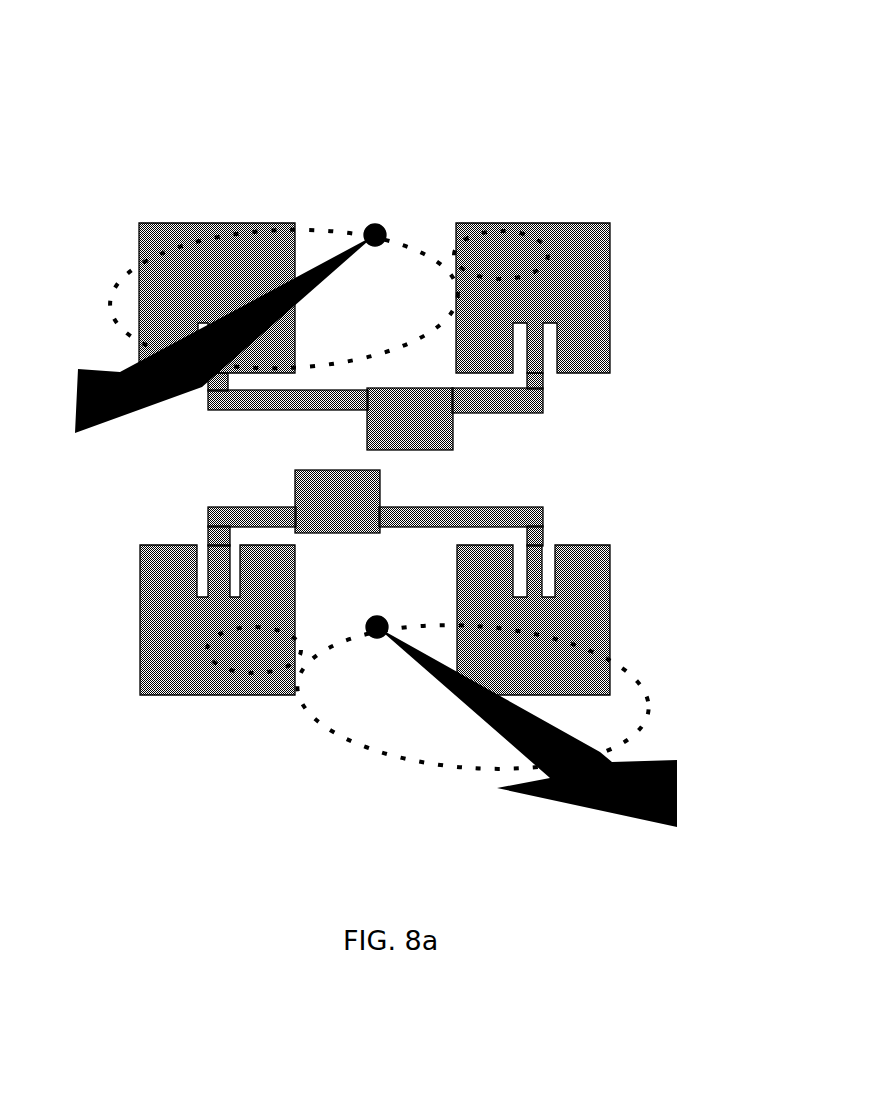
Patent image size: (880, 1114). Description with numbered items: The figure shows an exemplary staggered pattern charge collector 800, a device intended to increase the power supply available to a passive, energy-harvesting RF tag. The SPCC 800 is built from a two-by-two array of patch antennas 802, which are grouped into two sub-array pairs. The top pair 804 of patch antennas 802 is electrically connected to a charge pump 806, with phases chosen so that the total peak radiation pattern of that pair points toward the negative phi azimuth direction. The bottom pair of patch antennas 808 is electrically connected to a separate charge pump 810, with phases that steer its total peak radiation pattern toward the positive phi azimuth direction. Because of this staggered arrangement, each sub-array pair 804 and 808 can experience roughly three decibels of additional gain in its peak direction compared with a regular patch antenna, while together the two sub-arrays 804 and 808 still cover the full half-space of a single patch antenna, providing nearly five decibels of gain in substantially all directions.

The staggered pattern charge collector 800 is at (436, 37).
The patch antennas 802 is at (598, 532).
The top pair of patch antennas 804 is at (500, 223).
The charge pump 806 is at (455, 430).
The bottom pair of patch antennas 808 is at (527, 747).
The charge pump 810 is at (308, 470).